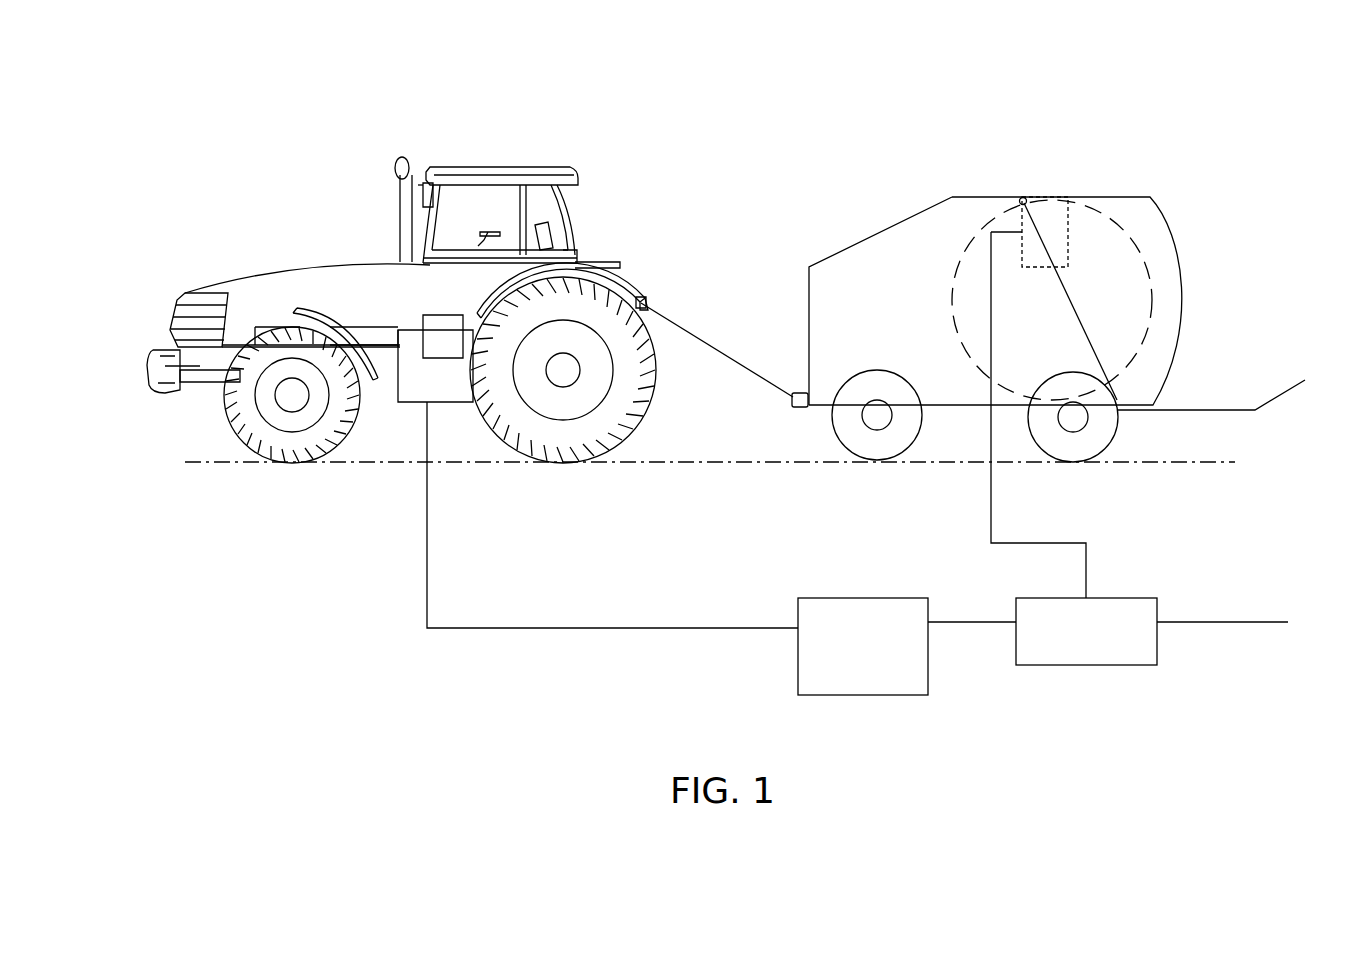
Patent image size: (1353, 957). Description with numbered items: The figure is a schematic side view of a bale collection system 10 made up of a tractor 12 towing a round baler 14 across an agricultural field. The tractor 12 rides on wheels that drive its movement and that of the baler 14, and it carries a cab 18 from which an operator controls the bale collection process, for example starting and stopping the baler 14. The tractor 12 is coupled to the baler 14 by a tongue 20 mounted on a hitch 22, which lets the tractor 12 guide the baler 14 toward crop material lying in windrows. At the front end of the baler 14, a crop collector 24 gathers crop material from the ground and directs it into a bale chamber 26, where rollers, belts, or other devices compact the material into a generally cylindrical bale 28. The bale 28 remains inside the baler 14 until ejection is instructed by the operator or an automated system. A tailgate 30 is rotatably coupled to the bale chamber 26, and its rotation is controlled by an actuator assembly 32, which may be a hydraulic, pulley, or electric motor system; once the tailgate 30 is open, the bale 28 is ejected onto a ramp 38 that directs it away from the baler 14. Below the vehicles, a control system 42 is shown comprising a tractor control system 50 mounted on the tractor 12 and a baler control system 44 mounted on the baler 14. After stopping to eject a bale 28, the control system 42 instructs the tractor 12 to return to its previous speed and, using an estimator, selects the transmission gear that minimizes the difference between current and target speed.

The bale collection system 10 is at (678, 192).
The tractor 12 is at (330, 217).
The round baler 14 is at (947, 180).
The cab 18 is at (470, 205).
The tongue 20 is at (717, 350).
The hitch 22 is at (647, 302).
The crop collector 24 is at (790, 403).
The bale chamber 26 is at (880, 232).
The bale 28 is at (1138, 248).
The tailgate 30 is at (1150, 197).
The actuator assembly 32 is at (1043, 197).
The ramp 38 is at (1207, 407).
The control system 42 is at (963, 737).
The baler control system 44 is at (1157, 635).
The tractor control system 50 is at (798, 648).